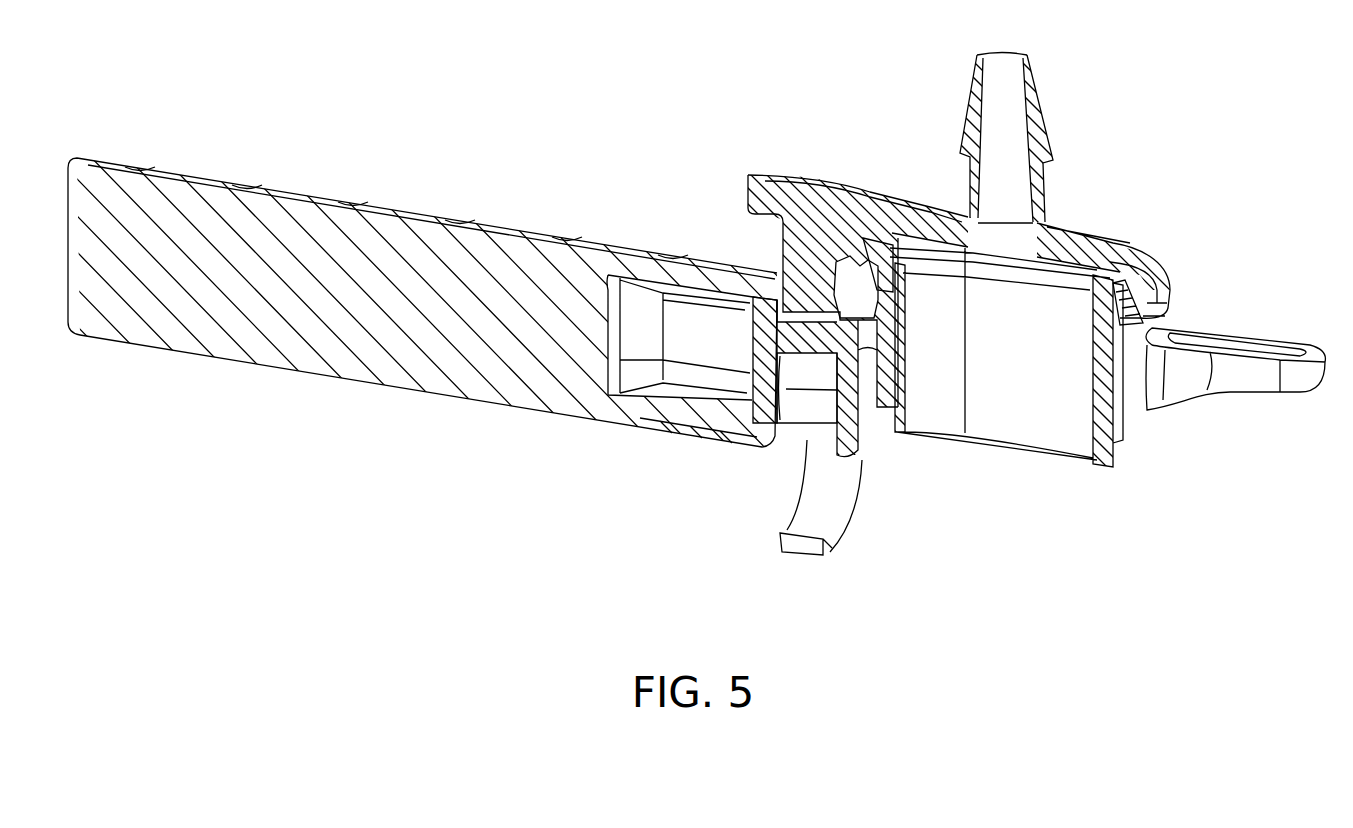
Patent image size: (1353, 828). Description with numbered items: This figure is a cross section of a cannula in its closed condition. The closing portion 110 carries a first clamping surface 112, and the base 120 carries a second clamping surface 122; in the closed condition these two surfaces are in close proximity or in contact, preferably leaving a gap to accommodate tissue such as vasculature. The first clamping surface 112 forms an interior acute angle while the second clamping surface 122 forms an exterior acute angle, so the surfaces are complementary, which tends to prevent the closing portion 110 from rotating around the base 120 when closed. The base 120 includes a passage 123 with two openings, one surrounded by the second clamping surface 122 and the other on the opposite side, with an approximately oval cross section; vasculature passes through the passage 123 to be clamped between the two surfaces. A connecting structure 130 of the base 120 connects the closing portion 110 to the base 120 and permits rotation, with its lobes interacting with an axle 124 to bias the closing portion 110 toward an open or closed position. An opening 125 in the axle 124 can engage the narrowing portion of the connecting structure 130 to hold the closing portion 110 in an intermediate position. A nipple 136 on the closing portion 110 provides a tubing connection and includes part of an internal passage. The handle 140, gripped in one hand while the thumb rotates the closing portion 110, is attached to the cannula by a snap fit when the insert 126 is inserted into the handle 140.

The closing portion 110 is at (1147, 242).
The first clamping surface 112 is at (1140, 300).
The base 120 is at (873, 423).
The second clamping surface 122 is at (1120, 330).
The passage 123 is at (1041, 433).
The axle 124 is at (750, 343).
The opening 125 is at (803, 393).
The insert 126 is at (633, 323).
The connecting structure 130 is at (802, 557).
The nipple 136 is at (1053, 125).
The handle 140 is at (313, 197).